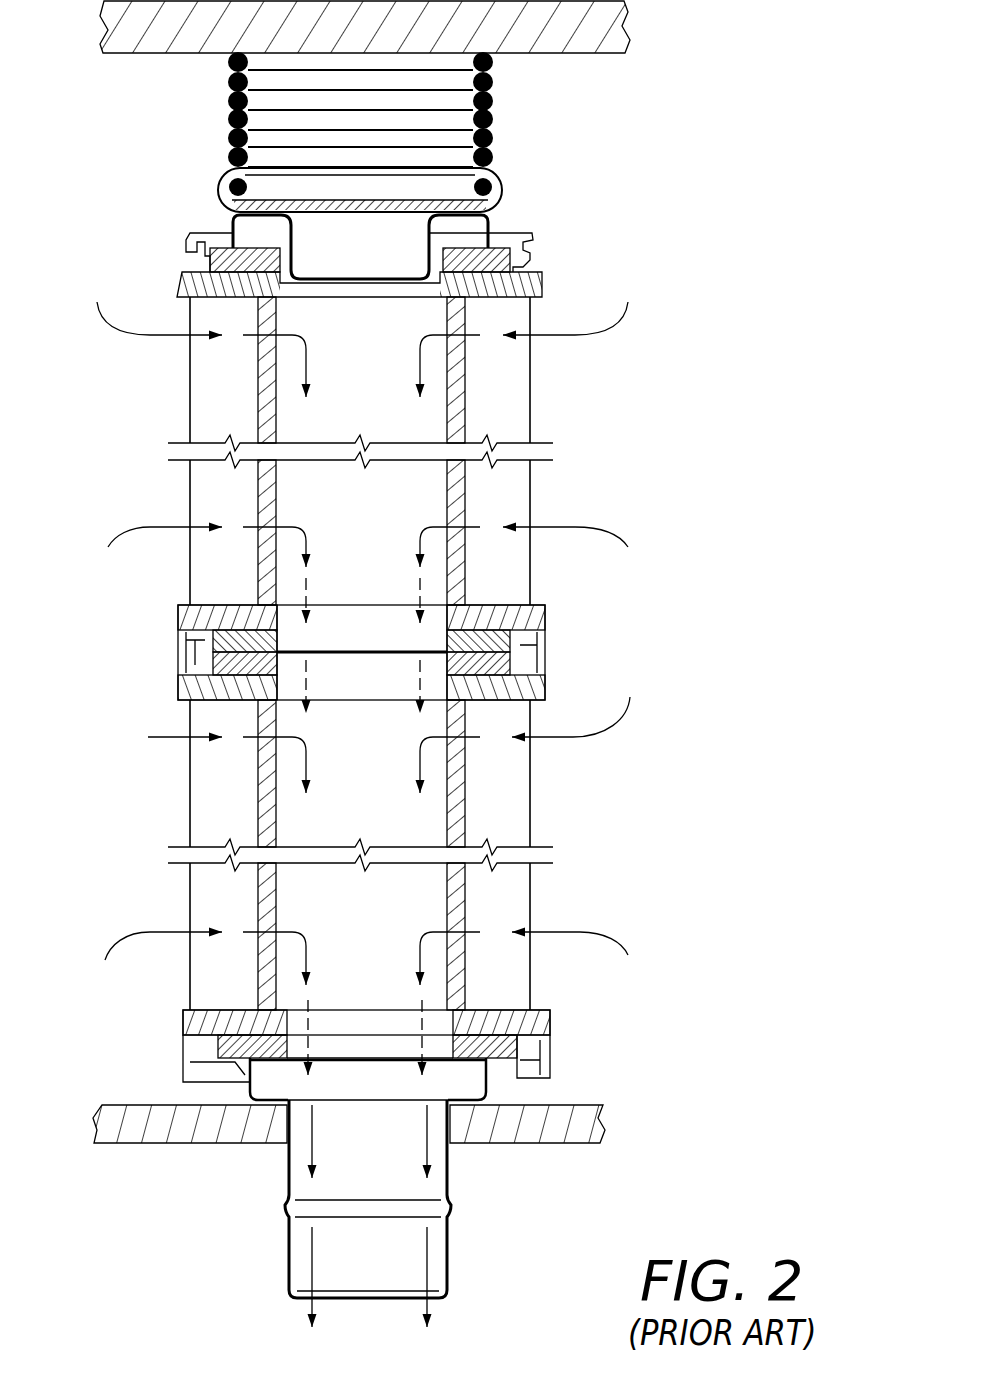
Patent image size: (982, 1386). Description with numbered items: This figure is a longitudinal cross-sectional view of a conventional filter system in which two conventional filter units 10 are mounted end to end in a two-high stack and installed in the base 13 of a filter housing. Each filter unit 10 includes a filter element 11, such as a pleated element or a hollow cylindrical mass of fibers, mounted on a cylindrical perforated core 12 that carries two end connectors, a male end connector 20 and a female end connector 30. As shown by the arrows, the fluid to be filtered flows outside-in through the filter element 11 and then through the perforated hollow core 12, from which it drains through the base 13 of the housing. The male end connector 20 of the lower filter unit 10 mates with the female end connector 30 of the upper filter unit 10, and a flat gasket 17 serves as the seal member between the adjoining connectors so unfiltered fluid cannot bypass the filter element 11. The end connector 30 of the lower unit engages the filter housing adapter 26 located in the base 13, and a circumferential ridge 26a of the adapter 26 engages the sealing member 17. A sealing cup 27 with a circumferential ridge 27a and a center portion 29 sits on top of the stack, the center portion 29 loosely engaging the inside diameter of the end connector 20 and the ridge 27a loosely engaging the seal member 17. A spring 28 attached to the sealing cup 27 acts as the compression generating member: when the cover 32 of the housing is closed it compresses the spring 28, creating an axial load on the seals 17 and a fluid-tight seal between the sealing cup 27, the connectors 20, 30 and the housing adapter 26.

The filter unit 10 is at (190, 405).
The filter element 11 is at (500, 383).
The perforated core 12 is at (463, 358).
The base 13 is at (565, 1142).
The gasket 17 is at (220, 252).
The male end connector 20 is at (533, 238).
The filter housing adapter 26 is at (450, 1255).
The circumferential ridge 26a is at (240, 1070).
The sealing cup 27 is at (502, 192).
The circumferential ridge 27a is at (210, 258).
The spring 28 is at (487, 141).
The center portion 29 is at (397, 283).
The female end connector 30 is at (545, 620).
The cover 32 is at (597, 55).